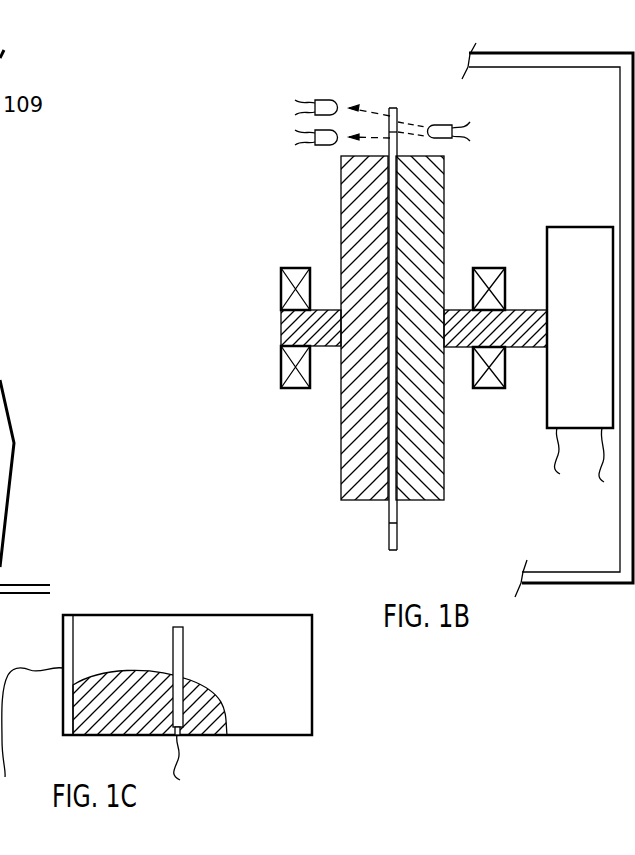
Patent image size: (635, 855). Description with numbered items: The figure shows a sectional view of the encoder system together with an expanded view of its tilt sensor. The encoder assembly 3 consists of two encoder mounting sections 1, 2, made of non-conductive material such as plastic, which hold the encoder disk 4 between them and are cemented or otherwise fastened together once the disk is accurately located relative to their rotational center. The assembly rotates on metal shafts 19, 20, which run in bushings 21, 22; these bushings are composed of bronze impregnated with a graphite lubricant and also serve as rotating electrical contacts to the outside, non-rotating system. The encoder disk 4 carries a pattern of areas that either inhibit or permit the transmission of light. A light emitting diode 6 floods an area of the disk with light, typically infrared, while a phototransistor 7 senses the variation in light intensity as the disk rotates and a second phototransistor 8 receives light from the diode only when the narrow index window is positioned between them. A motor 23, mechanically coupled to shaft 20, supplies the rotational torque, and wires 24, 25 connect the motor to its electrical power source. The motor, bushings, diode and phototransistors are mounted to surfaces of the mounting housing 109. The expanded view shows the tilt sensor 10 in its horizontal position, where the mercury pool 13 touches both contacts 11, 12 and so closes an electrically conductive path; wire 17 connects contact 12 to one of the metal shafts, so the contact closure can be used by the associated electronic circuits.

In FIG. 1B, the encoder mounting section 1 is at (349, 222).
In FIG. 1B, the encoder mounting section 2 is at (433, 215).
In FIG. 1B, the encoder assembly 3 is at (396, 110).
In FIG. 1B, the encoder disk 4 is at (398, 143).
In FIG. 1B, the light emitting diode 6 is at (446, 125).
In FIG. 1B, the phototransistor 7 is at (320, 100).
In FIG. 1B, the phototransistor 8 is at (318, 146).
In FIG. 1B, the shaft 19 is at (281, 335).
In FIG. 1B, the shaft 20 is at (518, 347).
In FIG. 1B, the bushing 21 is at (281, 373).
In FIG. 1B, the bushing 22 is at (488, 388).
In FIG. 1B, the motor 23 is at (577, 227).
In FIG. 1B, the wire 24 is at (557, 457).
In FIG. 1B, the wire 25 is at (601, 476).
In FIG. 1B, the mounting housing 109 is at (529, 68).
In FIG. 1C, the tilt sensor 10 is at (218, 616).
In FIG. 1C, the contact 11 is at (72, 643).
In FIG. 1C, the contact 12 is at (184, 643).
In FIG. 1C, the mercury pool 13 is at (114, 680).
In FIG. 1C, the wire 17 is at (183, 753).